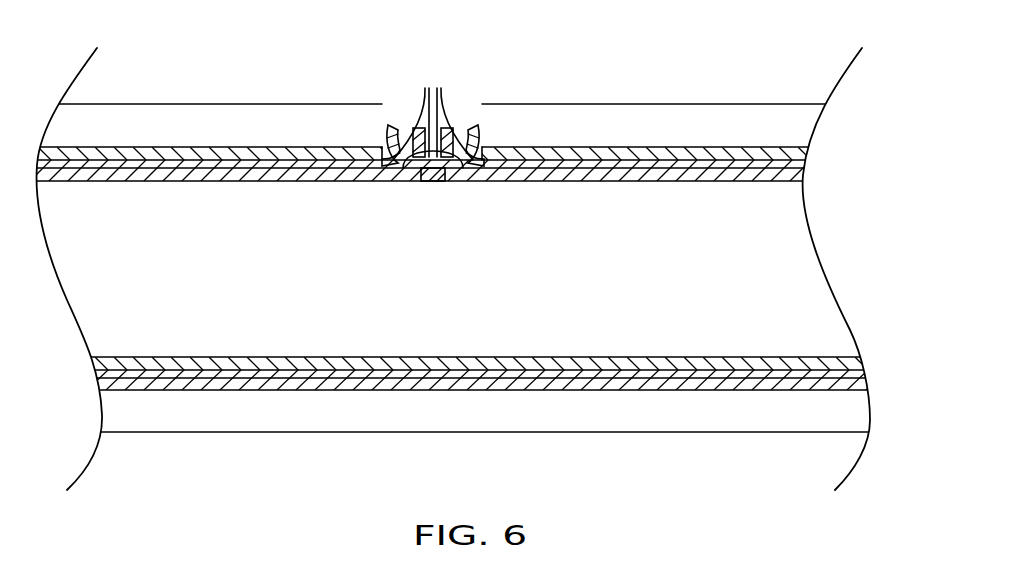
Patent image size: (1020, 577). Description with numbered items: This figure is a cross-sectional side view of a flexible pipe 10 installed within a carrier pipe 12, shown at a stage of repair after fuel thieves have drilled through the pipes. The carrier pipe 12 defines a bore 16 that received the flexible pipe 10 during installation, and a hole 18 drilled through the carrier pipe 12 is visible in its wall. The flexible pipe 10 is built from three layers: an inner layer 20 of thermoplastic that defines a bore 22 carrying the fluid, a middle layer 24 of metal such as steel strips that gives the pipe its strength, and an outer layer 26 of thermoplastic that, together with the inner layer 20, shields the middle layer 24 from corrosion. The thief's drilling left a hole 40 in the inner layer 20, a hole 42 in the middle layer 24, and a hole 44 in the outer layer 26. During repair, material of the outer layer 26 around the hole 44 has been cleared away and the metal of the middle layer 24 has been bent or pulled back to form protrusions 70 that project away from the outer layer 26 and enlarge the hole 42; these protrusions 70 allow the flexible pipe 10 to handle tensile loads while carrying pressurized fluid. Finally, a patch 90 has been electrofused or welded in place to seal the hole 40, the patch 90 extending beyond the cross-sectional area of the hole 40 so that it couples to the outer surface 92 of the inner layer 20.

The flexible pipe 10 is at (858, 291).
The carrier pipe 12 is at (190, 104).
The bore 16 is at (88, 133).
The hole 18 is at (496, 97).
The inner layer 20 is at (600, 172).
The bore 22 is at (193, 268).
The middle layer 24 is at (682, 161).
The outer layer 26 is at (720, 148).
The hole 40 is at (418, 174).
The hole 42 is at (398, 170).
The hole 44 is at (478, 140).
The protrusions 70 is at (433, 107).
The patch 90 is at (430, 176).
The outer surface 92 is at (450, 178).